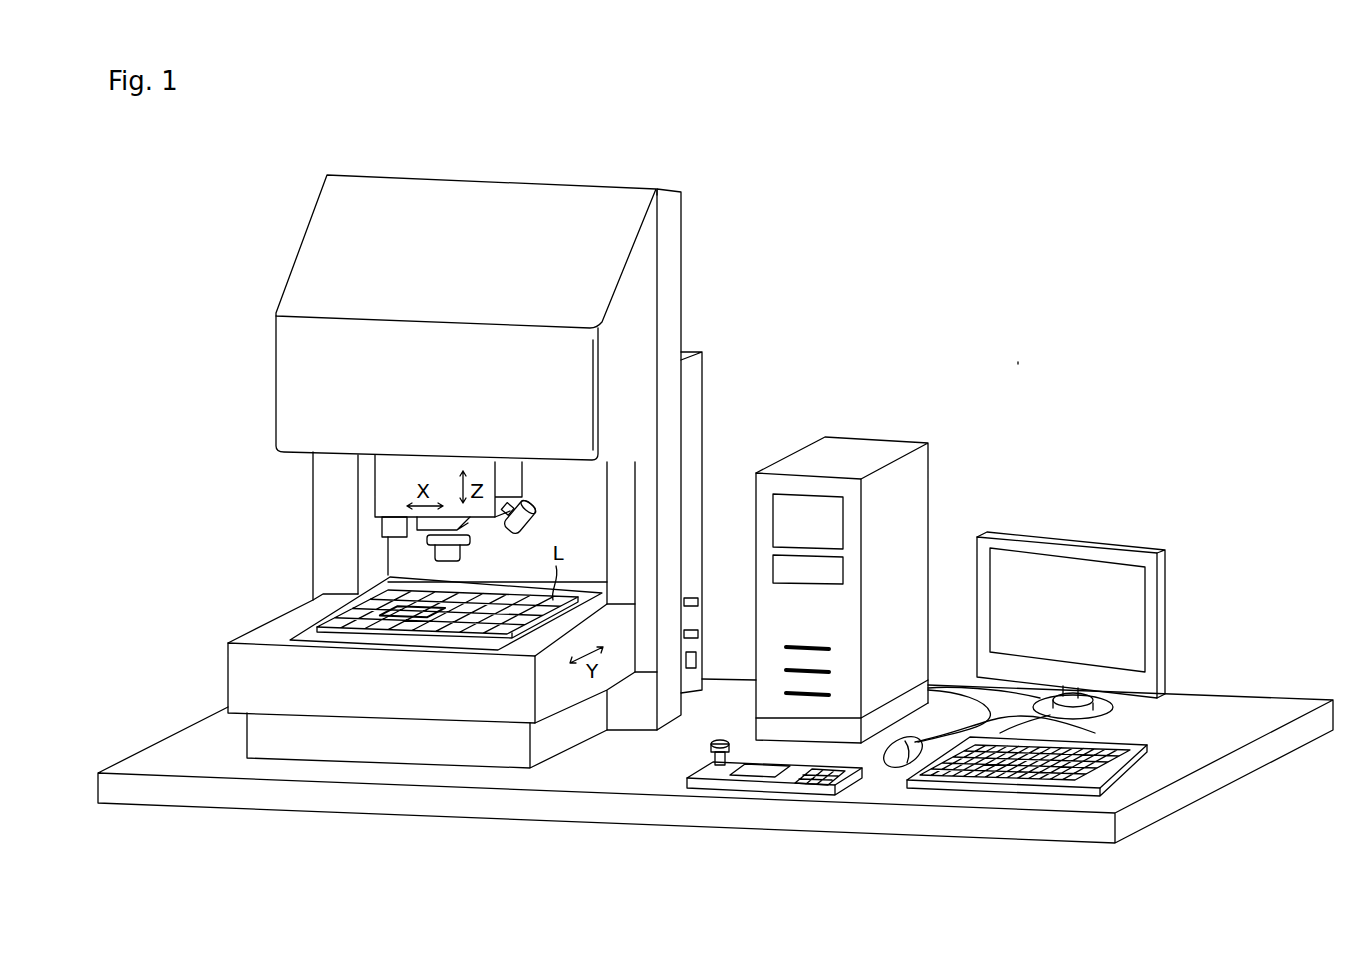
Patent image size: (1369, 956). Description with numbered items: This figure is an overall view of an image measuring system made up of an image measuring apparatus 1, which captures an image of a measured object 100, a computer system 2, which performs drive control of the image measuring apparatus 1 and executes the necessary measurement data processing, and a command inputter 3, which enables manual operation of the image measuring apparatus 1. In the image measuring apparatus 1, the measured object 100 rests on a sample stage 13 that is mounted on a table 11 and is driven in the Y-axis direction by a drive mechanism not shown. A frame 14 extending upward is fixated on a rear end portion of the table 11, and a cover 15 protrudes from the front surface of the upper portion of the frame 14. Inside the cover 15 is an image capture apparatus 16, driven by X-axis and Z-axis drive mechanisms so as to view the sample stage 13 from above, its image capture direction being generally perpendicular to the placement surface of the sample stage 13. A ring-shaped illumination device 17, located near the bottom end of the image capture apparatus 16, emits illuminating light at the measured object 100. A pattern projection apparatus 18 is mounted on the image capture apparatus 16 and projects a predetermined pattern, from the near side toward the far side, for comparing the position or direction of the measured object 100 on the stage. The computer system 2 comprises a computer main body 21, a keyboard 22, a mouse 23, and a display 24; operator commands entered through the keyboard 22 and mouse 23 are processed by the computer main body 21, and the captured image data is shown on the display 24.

The image measuring apparatus 1 is at (720, 212).
The computer system 2 is at (1019, 362).
The command inputter 3 is at (758, 770).
The table 11 is at (240, 673).
The sample stage 13 is at (337, 610).
The frame 14 is at (670, 411).
The cover 15 is at (284, 373).
The image capture apparatus 16 is at (389, 483).
The ring-shaped illumination device 17 is at (432, 538).
The pattern projection apparatus 18 is at (523, 528).
The computer main body 21 is at (852, 447).
The keyboard 22 is at (1008, 777).
The mouse 23 is at (890, 768).
The display 24 is at (1062, 572).
The measured object 100 is at (413, 592).